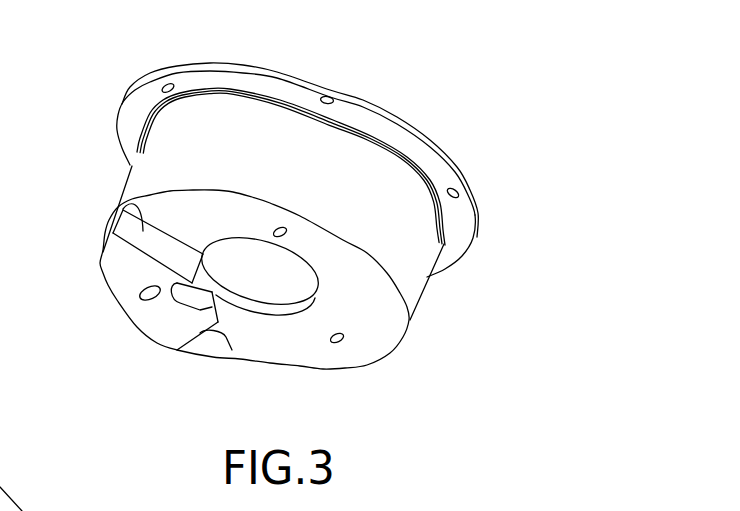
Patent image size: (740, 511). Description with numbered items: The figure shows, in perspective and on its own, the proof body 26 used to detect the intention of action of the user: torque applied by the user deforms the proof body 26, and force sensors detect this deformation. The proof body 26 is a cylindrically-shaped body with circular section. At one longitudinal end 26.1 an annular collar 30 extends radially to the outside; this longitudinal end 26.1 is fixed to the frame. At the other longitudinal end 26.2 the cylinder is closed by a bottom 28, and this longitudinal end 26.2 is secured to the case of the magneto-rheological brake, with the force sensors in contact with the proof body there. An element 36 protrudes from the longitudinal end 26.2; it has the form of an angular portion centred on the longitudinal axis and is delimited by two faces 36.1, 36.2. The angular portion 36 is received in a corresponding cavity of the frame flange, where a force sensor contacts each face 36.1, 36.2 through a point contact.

The proof body 26 is at (291, 77).
The longitudinal end 26.1 is at (409, 103).
The longitudinal end 26.2 is at (280, 307).
The bottom 28 is at (360, 338).
The annular collar 30 is at (457, 230).
The protruding element 36 is at (116, 322).
The face 36.1 is at (143, 230).
The face 36.2 is at (223, 347).